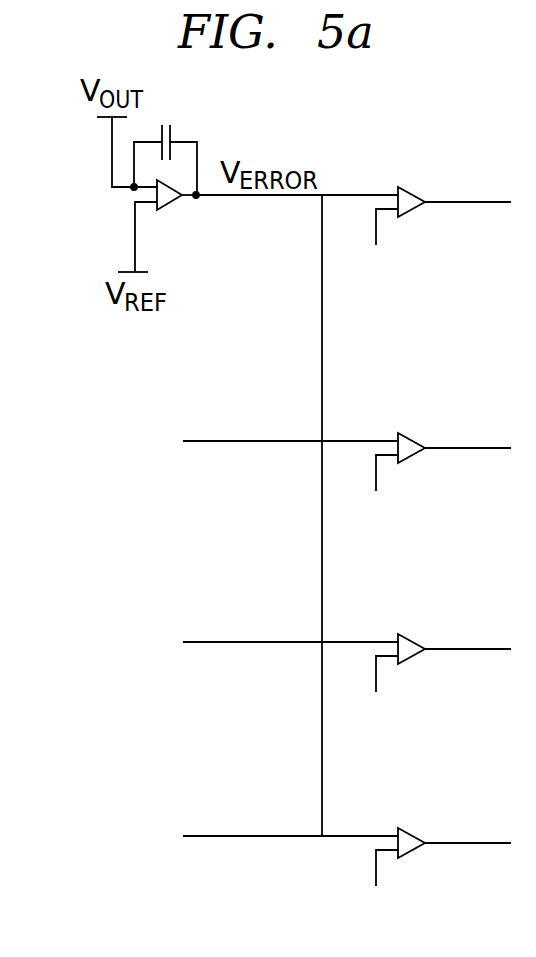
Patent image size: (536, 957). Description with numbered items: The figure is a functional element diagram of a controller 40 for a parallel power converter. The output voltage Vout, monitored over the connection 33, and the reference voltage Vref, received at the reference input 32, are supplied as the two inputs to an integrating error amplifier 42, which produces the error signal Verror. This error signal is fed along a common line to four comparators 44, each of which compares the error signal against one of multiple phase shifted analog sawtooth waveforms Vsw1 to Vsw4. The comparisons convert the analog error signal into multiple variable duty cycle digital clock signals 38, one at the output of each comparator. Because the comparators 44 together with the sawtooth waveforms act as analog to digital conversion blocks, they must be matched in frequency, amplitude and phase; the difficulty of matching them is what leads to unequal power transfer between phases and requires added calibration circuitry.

The reference input 32 is at (132, 228).
The connection 33 is at (110, 150).
The variable duty cycle digital clock signals 38 is at (465, 205).
The controller 40 is at (297, 134).
The integrating error amplifier 42 is at (167, 210).
The comparators 44 is at (410, 188).